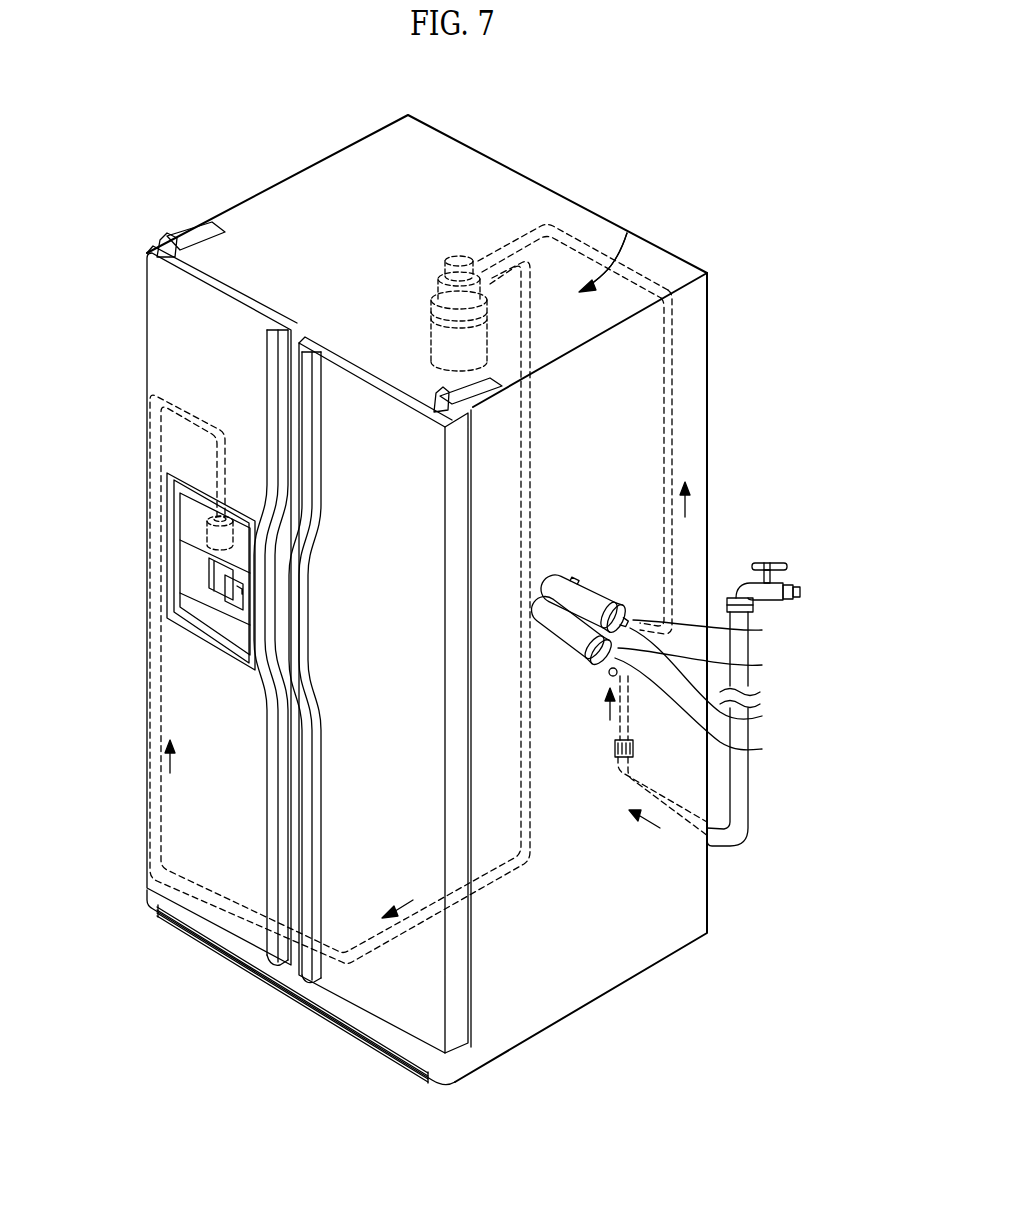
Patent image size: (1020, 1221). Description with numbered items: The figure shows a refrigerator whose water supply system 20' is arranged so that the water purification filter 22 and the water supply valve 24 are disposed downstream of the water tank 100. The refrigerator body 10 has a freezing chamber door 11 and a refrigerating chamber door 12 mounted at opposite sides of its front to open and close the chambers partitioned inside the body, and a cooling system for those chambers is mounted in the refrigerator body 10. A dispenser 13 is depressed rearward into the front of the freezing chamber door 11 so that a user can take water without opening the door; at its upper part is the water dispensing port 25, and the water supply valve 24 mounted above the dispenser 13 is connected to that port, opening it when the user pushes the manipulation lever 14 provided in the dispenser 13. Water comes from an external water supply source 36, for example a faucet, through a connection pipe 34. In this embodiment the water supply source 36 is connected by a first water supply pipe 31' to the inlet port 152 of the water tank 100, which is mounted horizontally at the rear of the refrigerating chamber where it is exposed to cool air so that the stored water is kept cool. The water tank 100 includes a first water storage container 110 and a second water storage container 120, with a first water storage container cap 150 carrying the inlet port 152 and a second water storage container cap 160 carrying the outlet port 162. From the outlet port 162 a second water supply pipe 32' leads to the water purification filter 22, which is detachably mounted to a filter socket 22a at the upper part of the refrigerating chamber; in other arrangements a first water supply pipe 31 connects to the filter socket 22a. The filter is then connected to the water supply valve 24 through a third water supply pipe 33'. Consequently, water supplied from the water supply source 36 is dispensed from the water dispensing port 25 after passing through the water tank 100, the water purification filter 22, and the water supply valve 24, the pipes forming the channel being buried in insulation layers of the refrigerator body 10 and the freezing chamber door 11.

The refrigerator body 10 is at (320, 182).
The freezing chamber door 11 is at (165, 307).
The refrigerating chamber door 12 is at (382, 537).
The dispenser 13 is at (192, 593).
The manipulation lever 14 is at (227, 597).
The water supply system 20' is at (641, 239).
The water purification filter 22 is at (432, 335).
The filter socket 22a is at (452, 258).
The water supply valve 24 is at (208, 533).
The water dispensing port 25 is at (213, 567).
The first water supply pipe 31 is at (573, 211).
The first water supply pipe 31' is at (640, 756).
The second water supply pipe 32' is at (705, 462).
The third water supply pipe 33' is at (378, 613).
The connection pipe 34 is at (748, 803).
The external water supply source 36 is at (788, 585).
The water tank 100 is at (642, 607).
The first water storage container 110 is at (567, 637).
The second water storage container 120 is at (590, 597).
The first water storage container cap 150 is at (762, 749).
The inlet port 152 is at (762, 716).
The second water storage container cap 160 is at (762, 665).
The outlet port 162 is at (762, 630).